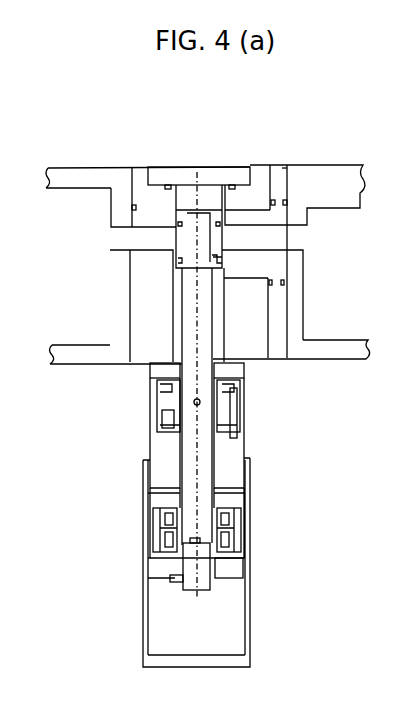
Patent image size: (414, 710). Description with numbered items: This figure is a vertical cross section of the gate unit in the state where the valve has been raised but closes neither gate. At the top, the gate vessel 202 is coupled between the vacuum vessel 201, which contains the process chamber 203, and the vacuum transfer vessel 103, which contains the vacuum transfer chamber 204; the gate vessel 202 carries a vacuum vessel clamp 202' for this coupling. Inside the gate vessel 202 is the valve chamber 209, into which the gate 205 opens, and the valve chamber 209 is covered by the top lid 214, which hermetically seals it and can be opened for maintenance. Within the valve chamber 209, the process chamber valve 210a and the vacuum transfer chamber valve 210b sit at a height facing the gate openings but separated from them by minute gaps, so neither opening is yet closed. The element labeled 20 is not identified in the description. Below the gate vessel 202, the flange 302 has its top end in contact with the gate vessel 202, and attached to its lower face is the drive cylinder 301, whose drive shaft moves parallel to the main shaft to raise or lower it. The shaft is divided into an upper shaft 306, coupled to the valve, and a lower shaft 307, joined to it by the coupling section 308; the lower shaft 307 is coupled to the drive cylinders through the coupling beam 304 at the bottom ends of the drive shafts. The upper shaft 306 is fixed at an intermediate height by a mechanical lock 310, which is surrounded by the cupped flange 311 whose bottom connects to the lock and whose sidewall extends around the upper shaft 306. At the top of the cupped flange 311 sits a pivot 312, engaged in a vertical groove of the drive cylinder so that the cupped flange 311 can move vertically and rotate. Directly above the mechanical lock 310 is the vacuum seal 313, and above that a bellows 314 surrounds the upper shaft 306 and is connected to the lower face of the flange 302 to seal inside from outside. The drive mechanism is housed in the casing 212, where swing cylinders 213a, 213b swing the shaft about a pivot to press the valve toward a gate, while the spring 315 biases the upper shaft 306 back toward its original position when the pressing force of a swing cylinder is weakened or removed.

The vacuum transfer vessel 103 is at (72, 178).
The gate vessel 202 is at (211, 237).
The vacuum vessel clamp 202' is at (335, 143).
The top lid 214 is at (190, 172).
The valve chamber 209 is at (215, 192).
The vacuum vessel 201 is at (348, 180).
The gate 205 is at (128, 240).
The process chamber 203 is at (322, 298).
The vacuum transfer chamber 204 is at (97, 310).
The process chamber valve 210a is at (222, 265).
The vacuum transfer chamber valve 210b is at (180, 262).
The support unit 20 is at (395, 313).
The flange 302 is at (153, 372).
The pivot 312 is at (193, 402).
The bellows 314 is at (167, 418).
The mechanical lock 310 is at (145, 460).
The spring 315 is at (165, 495).
The swing cylinder 213b is at (157, 552).
The coupling section 308 is at (170, 583).
The lower shaft 307 is at (183, 592).
The drive cylinder 301 is at (237, 390).
The cupped flange 311 is at (235, 437).
The vacuum seal 313 is at (243, 458).
The upper shaft 306 is at (200, 493).
The swing cylinder 213a is at (235, 552).
The coupling beam 304 is at (237, 567).
The casing 212 is at (250, 620).